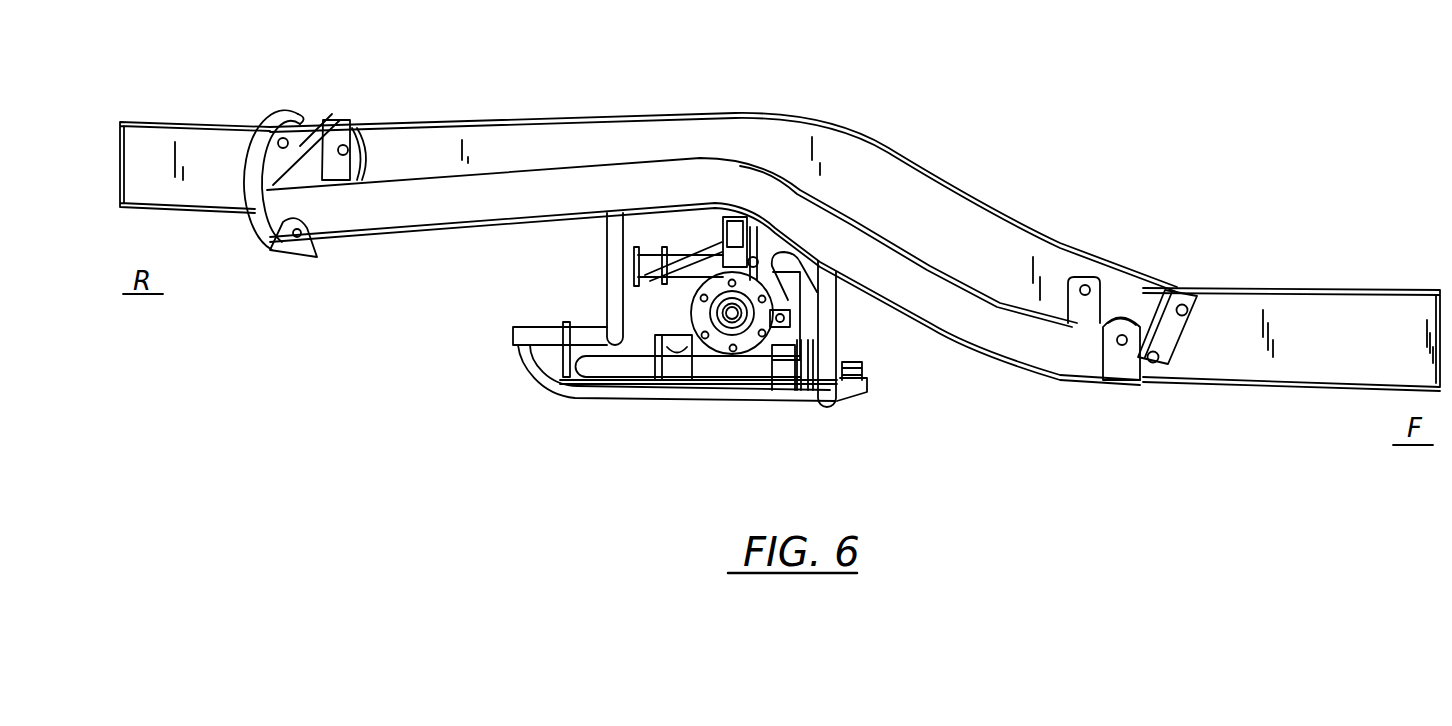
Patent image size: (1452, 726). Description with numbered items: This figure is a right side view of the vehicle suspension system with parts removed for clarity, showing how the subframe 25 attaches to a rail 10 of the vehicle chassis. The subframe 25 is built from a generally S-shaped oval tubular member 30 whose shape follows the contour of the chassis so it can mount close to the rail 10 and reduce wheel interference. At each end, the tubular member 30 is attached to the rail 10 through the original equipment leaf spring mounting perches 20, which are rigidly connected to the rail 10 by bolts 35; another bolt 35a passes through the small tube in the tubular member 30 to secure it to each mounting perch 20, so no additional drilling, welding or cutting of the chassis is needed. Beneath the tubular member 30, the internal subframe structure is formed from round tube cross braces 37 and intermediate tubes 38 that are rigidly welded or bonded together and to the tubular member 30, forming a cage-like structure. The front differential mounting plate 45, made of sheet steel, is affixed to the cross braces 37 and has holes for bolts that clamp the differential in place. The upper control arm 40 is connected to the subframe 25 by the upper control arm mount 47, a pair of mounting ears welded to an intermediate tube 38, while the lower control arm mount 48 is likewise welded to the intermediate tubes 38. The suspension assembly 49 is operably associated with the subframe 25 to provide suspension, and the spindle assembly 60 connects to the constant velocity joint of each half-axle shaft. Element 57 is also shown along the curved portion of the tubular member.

The rails 10 is at (1412, 248).
The leaf spring mounting perches 20 is at (282, 243).
The subframe 25 is at (532, 390).
The tubular members 30 is at (567, 175).
The bolts 35 is at (341, 148).
The bolt 35a is at (297, 239).
The cross braces 37 is at (606, 308).
The intermediate tubes 38 is at (772, 253).
The upper control arm 40 is at (720, 237).
The front differential mounting plate 45 is at (845, 390).
The upper control arm mount 47 is at (634, 256).
The lower control arm mount 48 is at (562, 358).
The suspension assembly 49 is at (688, 303).
The curved tube section 57 is at (913, 137).
The spindle assembly 60 is at (785, 297).